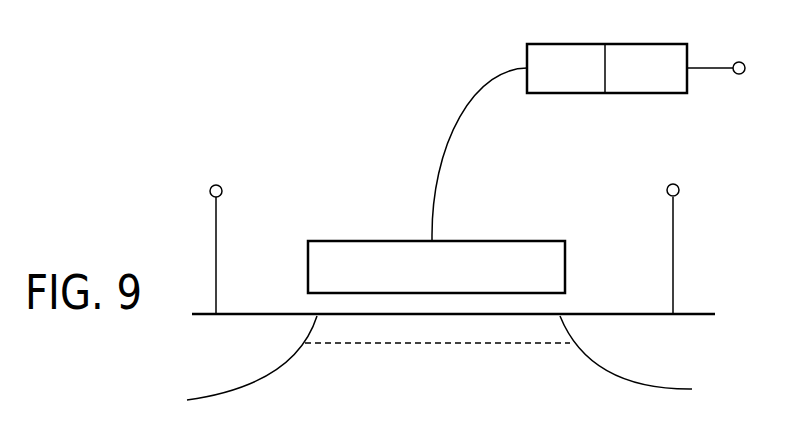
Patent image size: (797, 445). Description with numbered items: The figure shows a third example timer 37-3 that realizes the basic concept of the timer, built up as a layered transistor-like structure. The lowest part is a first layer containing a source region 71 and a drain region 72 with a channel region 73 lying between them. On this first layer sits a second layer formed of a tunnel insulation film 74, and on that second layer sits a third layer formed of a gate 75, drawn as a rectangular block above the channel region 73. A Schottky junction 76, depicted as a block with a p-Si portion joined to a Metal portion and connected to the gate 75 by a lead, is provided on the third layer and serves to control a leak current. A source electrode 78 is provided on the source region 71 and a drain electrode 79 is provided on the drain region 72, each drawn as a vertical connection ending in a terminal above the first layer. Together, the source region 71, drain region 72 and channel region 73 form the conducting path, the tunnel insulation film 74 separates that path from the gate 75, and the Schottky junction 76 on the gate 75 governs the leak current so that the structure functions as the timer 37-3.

The timer 37-3 is at (363, 87).
The source region 71 is at (270, 377).
The drain region 72 is at (611, 373).
The channel region 73 is at (427, 346).
The tunnel insulation film 74 is at (568, 300).
The gate 75 is at (562, 241).
The Schottky junction 76 is at (697, 93).
The source electrode 78 is at (209, 193).
The drain electrode 79 is at (680, 189).